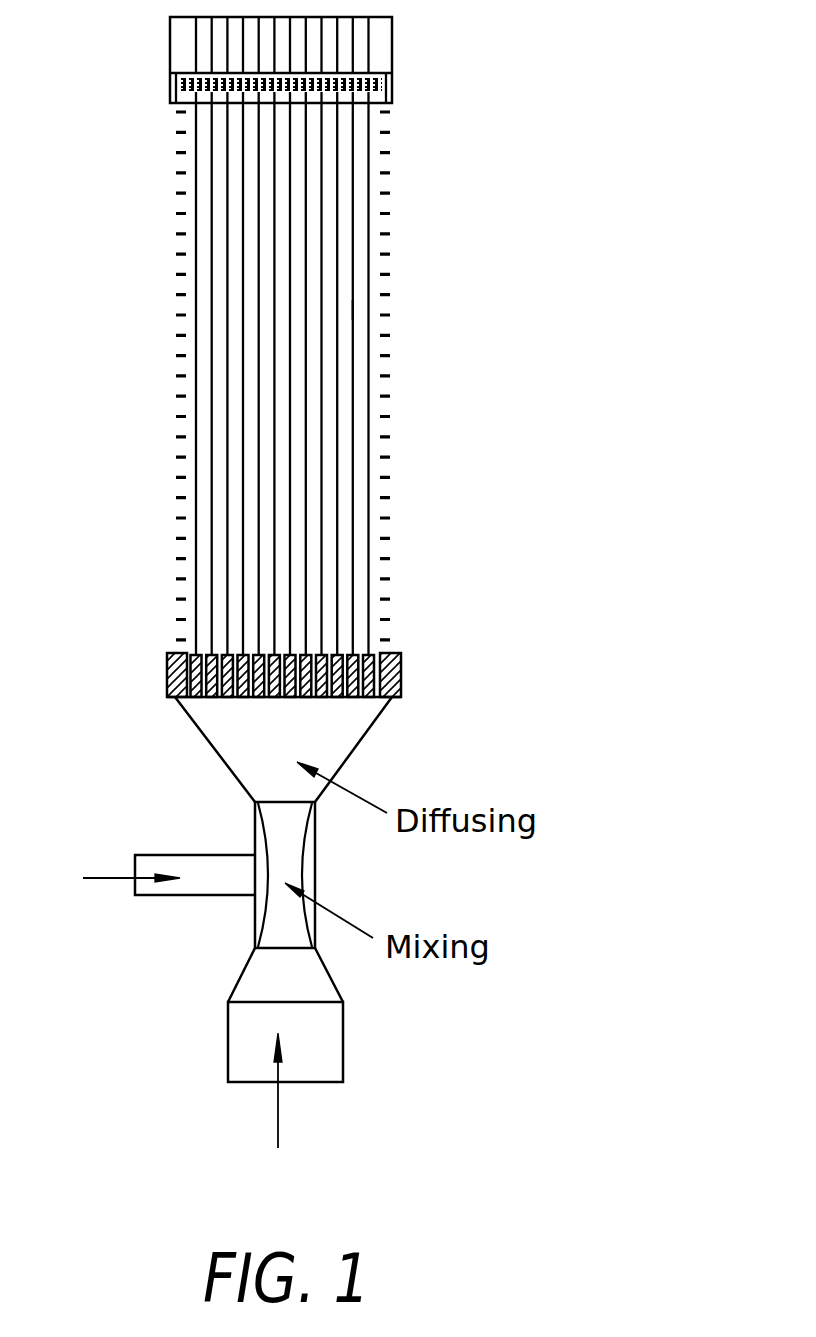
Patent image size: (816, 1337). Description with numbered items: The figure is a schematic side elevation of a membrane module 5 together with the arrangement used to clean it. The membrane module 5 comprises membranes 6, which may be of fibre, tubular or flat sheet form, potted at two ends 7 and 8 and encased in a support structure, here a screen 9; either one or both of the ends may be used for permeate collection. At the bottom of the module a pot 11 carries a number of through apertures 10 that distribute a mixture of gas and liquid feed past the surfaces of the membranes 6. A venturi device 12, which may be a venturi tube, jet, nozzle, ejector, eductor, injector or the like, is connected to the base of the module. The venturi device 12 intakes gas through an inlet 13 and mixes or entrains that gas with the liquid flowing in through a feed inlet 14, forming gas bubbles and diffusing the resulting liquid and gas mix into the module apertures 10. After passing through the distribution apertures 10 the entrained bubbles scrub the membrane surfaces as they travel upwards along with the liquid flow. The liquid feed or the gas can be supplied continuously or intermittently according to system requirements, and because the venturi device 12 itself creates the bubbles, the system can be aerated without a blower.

The membrane module 5 is at (417, 442).
The membranes 6 is at (355, 310).
The potted end 7 is at (418, 670).
The potted end 8 is at (392, 50).
The screen 9 is at (182, 397).
The through apertures 10 is at (357, 697).
The pot 11 is at (175, 693).
The venturi device 12 is at (317, 865).
The inlet 13 is at (210, 885).
The feed inlet 14 is at (318, 1040).